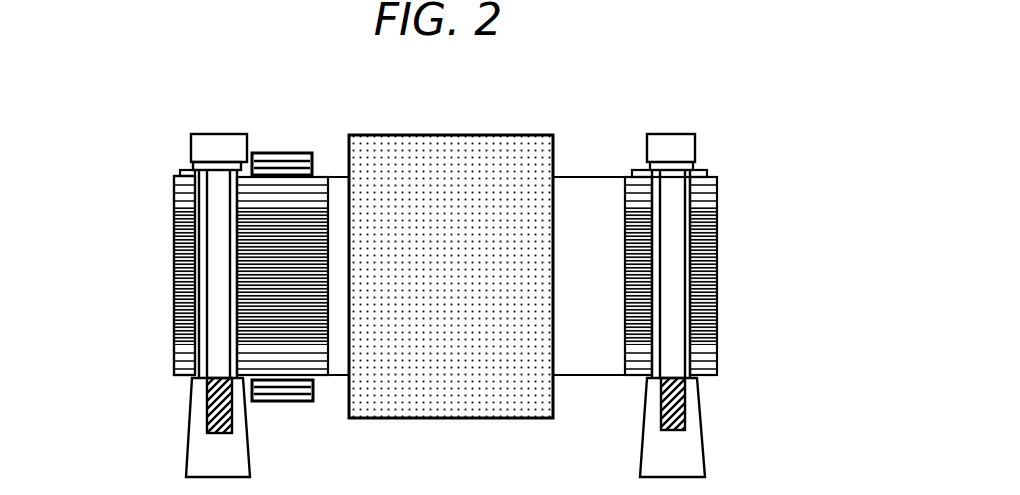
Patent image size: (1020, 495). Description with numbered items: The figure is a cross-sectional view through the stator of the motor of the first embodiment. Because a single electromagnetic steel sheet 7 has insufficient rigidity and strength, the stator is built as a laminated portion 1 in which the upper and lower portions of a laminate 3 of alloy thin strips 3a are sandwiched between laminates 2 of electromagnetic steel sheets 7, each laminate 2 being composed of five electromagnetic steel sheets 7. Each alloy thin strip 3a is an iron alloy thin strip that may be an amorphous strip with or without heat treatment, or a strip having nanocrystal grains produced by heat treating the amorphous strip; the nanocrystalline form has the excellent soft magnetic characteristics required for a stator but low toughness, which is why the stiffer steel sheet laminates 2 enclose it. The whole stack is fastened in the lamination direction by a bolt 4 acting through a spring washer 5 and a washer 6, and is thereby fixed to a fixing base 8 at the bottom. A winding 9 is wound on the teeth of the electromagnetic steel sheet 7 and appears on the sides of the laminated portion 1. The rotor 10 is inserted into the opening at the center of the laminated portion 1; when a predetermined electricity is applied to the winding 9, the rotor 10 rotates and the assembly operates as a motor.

The laminated portion 1 is at (163, 172).
The laminate of electromagnetic steel sheets 2 is at (737, 179).
The laminate of alloy thin strips 3 is at (737, 217).
The alloy thin strip 3a is at (177, 308).
The bolt 4 is at (697, 135).
The spring washer 5 is at (695, 158).
The washer 6 is at (708, 173).
The electromagnetic steel sheet 7 is at (178, 192).
The fixing base 8 is at (678, 462).
The winding 9 is at (308, 153).
The rotor 10 is at (458, 135).